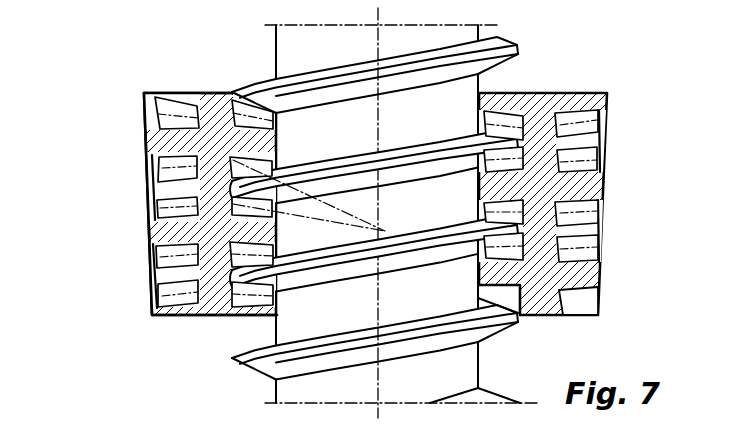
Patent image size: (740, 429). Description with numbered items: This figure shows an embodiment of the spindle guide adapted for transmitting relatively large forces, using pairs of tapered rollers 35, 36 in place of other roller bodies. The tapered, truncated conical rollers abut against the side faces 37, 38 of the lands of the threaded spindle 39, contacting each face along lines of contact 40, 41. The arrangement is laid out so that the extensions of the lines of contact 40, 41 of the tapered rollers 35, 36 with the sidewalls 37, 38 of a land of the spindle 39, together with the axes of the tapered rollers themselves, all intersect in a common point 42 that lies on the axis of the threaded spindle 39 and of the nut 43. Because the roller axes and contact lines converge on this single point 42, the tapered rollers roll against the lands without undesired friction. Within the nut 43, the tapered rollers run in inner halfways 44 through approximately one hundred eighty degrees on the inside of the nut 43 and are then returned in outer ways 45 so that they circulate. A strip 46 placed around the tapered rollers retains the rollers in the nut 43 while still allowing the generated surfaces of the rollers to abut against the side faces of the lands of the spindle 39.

The tapered roller 35 is at (200, 163).
The tapered roller 36 is at (200, 208).
The side face of land 37 is at (480, 141).
The side face of land 38 is at (390, 230).
The threaded spindle 39 is at (300, 330).
The line of contact 40 is at (500, 143).
The line of contact 41 is at (480, 210).
The common point 42 is at (388, 230).
The nut 43 is at (200, 232).
The inner halfway 44 is at (503, 213).
The outer way 45 is at (600, 122).
The strip 46 is at (155, 300).